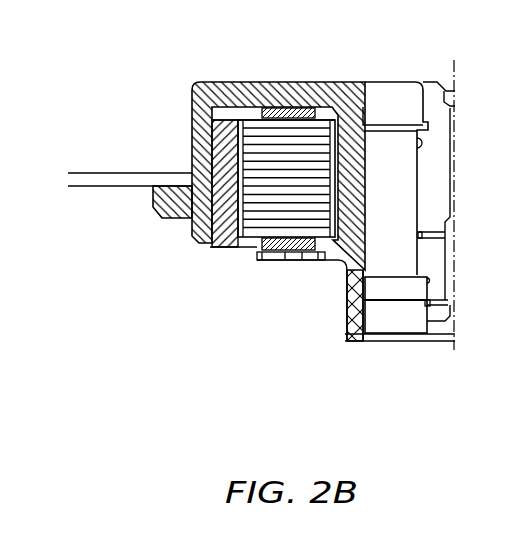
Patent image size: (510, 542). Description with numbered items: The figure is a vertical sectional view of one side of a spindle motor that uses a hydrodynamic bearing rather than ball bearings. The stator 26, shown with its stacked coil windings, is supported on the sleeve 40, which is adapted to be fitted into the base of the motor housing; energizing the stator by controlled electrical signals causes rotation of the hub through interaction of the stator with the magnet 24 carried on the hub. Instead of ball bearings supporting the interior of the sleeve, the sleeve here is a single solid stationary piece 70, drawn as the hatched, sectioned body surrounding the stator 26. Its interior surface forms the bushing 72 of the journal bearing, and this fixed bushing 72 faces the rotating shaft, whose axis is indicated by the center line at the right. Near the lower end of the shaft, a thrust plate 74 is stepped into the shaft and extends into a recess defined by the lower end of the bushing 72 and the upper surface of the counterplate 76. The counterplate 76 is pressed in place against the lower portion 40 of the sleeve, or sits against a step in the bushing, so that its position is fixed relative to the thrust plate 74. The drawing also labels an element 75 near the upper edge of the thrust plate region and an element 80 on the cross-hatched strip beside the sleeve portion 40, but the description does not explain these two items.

The magnet 24 is at (220, 210).
The stator 26 is at (277, 210).
The sleeve 40 is at (345, 280).
The single solid stationary piece 70 is at (404, 216).
The bushing 72 is at (417, 150).
The thrust plate 74 is at (350, 323).
The retaining ring 75 is at (417, 263).
The counterplate 76 is at (395, 325).
The spacer 80 is at (352, 296).